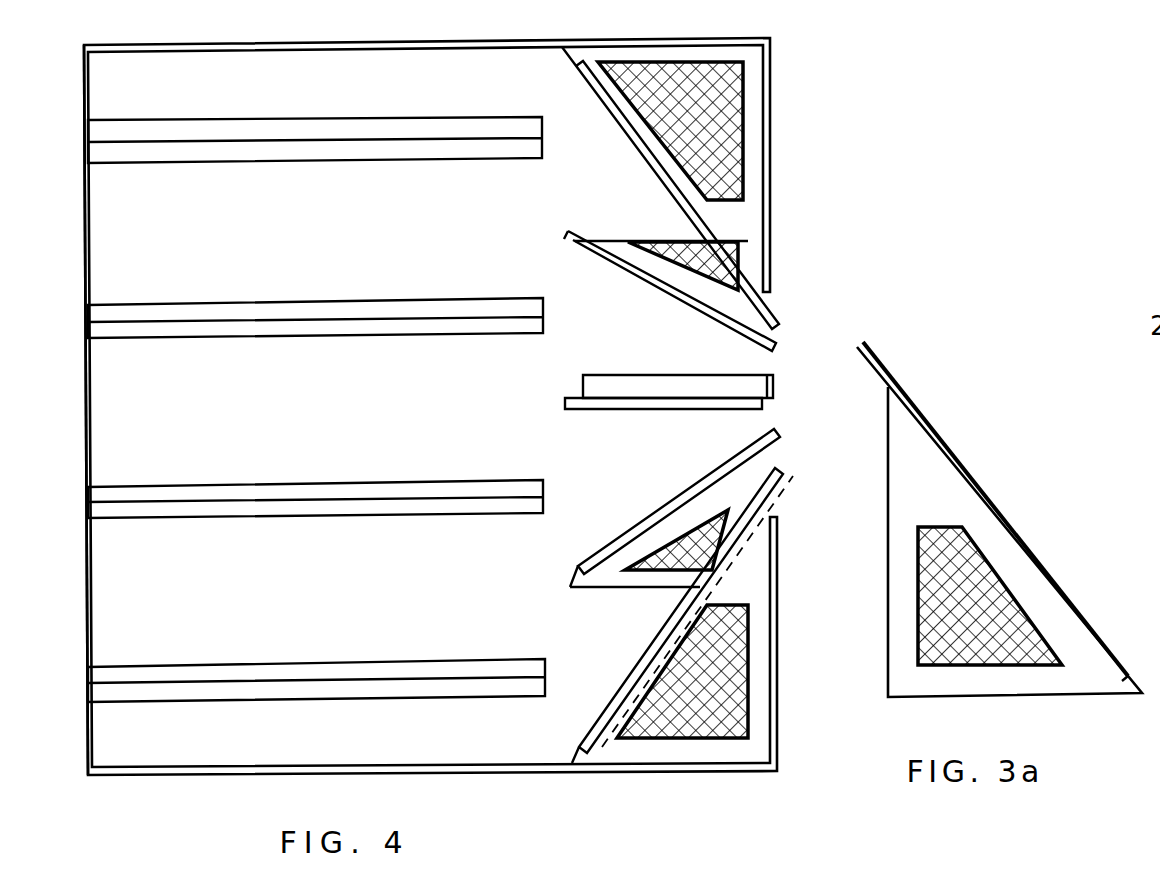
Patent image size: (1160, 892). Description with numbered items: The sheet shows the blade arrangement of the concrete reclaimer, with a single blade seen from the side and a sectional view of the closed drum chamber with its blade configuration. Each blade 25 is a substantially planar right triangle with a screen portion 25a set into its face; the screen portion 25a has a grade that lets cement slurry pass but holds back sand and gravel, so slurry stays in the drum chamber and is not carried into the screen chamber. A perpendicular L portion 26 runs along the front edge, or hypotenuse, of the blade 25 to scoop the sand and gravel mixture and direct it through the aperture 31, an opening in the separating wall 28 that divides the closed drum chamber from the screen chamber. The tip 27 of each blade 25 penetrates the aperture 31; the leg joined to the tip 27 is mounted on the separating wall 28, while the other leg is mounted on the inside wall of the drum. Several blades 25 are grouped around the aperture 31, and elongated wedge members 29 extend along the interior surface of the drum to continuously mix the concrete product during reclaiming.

In FIG. 4, the blade 25 is at (700, 212).
In FIG. 3A, the blade 25 is at (907, 487).
In FIG. 4, the screen portion 25a is at (642, 101).
In FIG. 3A, the screen portion 25a is at (982, 555).
In FIG. 4, the perpendicular L portion 26 is at (640, 153).
In FIG. 3A, the perpendicular L portion 26 is at (951, 440).
In FIG. 4, the tip 27 is at (781, 333).
In FIG. 3A, the tip 27 is at (862, 336).
In FIG. 4, the separating wall 28 is at (781, 163).
In FIG. 4, the elongated wedge member 29 is at (362, 128).
In FIG. 4, the aperture 31 is at (805, 321).